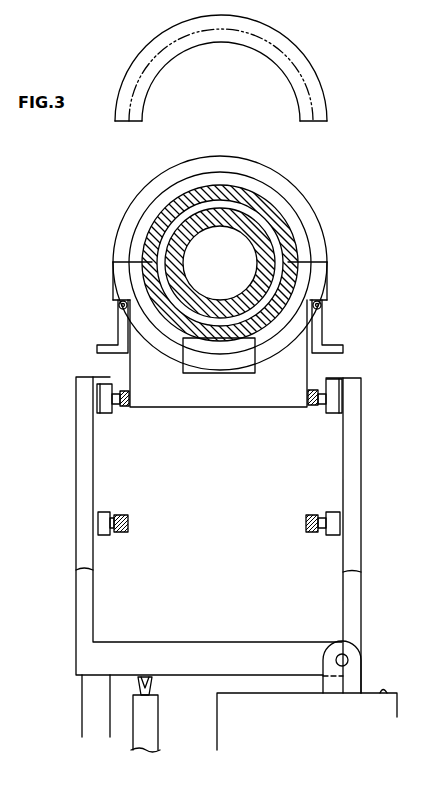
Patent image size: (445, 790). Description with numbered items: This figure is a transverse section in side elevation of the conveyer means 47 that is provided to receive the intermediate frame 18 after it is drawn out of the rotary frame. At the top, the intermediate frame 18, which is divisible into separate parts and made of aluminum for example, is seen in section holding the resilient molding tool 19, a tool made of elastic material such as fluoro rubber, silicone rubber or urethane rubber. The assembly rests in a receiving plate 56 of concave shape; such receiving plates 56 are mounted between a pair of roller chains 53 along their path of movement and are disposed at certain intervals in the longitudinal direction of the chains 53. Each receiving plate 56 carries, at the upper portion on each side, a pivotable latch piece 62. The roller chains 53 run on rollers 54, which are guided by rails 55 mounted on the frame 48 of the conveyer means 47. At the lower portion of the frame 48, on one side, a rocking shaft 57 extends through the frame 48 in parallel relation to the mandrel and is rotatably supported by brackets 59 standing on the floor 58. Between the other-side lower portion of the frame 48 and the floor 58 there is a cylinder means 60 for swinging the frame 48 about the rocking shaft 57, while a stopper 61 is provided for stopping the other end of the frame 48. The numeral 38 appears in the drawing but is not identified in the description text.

The intermediate frame 18 is at (316, 88).
The resilient molding tool 19 is at (238, 205).
The roll shaft 38 is at (192, 220).
The conveyer means 47 is at (373, 399).
The frame 48 is at (355, 611).
The roller chains 53 is at (325, 413).
The rollers 54 is at (116, 400).
The rails 55 is at (100, 410).
The receiving plates 56 is at (225, 395).
The rocking shaft 57 is at (350, 660).
The floor 58 is at (382, 695).
The brackets 59 is at (340, 696).
The cylinder means 60 is at (152, 719).
The stopper 61 is at (100, 718).
The pivotable latch piece 62 is at (105, 345).